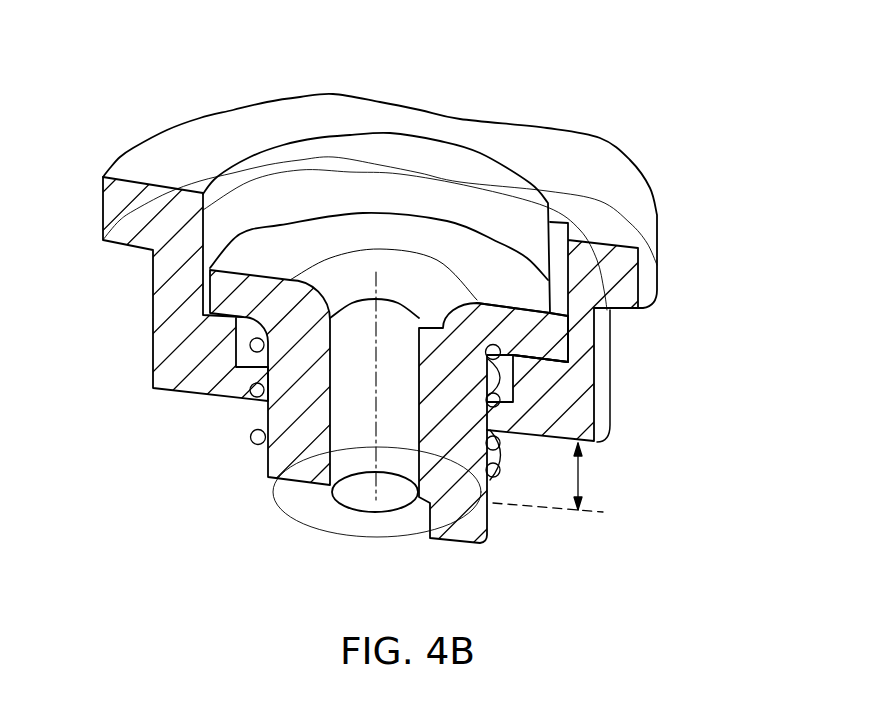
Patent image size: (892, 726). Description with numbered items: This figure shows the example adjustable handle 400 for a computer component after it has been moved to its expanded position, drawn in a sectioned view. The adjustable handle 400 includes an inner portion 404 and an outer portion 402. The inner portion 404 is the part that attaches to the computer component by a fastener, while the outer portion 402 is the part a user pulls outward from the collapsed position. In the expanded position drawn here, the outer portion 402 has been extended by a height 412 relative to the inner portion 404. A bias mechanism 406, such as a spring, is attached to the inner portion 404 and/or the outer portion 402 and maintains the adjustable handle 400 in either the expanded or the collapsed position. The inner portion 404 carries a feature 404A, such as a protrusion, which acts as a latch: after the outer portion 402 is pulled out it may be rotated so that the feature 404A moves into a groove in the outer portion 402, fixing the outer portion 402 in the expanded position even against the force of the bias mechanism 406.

The adjustable handle 400 is at (706, 157).
The outer portion 402 is at (556, 150).
The inner portion 404 is at (385, 238).
The feature 404A is at (551, 333).
The bias mechanism 406 is at (513, 392).
The height 412 is at (584, 478).